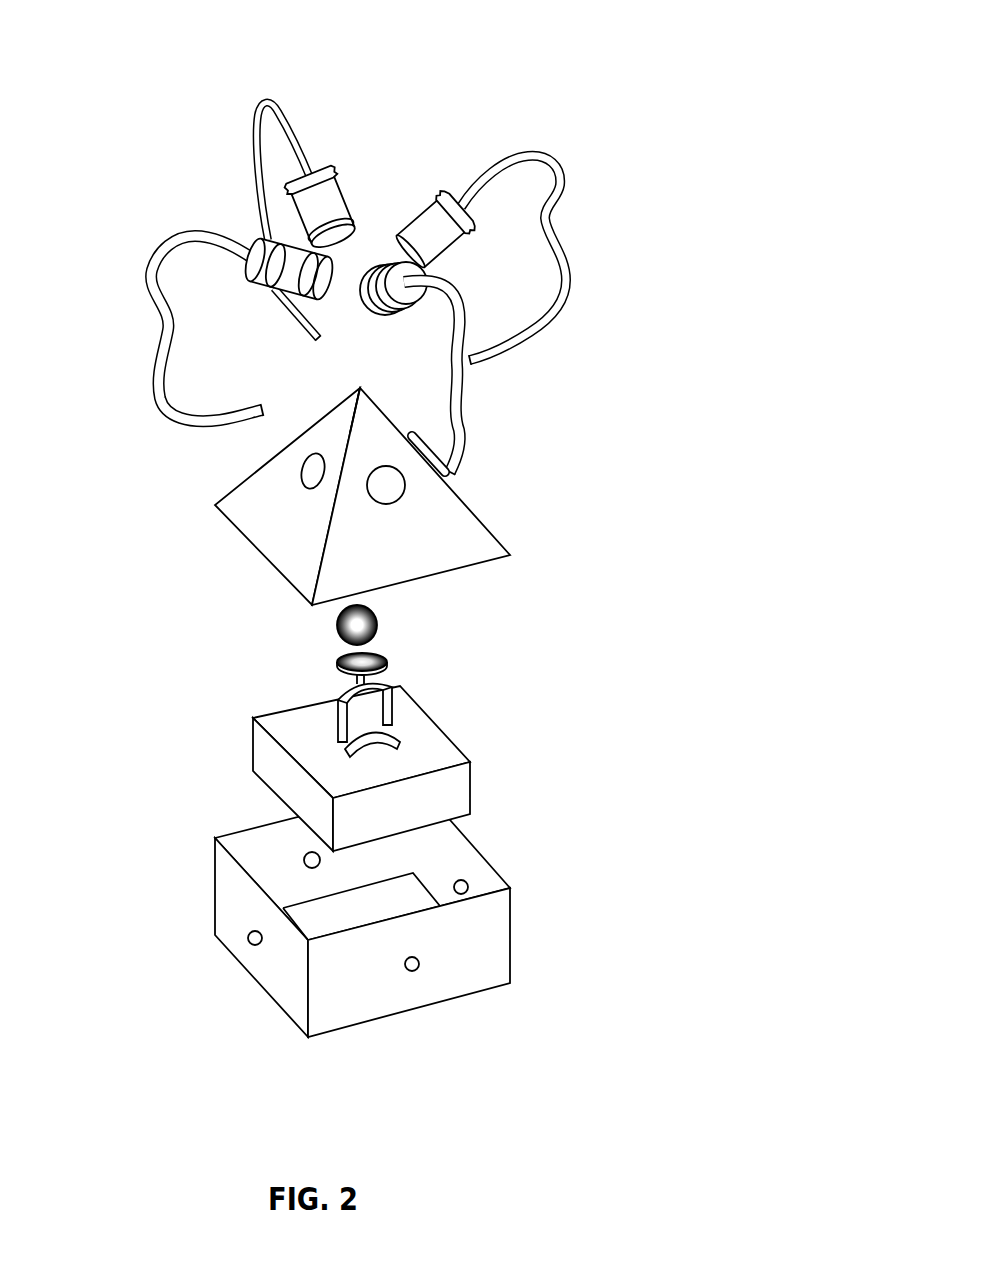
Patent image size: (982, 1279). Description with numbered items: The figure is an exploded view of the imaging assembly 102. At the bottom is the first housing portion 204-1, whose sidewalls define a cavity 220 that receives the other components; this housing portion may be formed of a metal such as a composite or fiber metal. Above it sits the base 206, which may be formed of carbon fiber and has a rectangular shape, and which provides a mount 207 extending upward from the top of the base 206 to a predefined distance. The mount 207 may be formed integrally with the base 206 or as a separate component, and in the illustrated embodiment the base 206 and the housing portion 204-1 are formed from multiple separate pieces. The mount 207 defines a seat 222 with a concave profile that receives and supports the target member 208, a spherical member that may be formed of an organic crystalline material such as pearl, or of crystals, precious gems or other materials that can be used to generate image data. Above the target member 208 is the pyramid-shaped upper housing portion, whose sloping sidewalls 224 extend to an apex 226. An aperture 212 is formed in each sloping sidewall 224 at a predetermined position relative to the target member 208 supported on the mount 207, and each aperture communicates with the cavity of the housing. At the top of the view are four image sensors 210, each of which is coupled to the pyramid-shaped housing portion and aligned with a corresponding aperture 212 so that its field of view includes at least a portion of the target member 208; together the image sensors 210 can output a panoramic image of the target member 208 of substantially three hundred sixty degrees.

The imaging assembly 102 is at (439, 522).
The first housing portion 204-1 is at (374, 691).
The base 206 is at (471, 776).
The mount 207 is at (260, 704).
The target member 208 is at (378, 628).
The image sensor 210 is at (382, 243).
The aperture 212 is at (278, 513).
The cavity 220 is at (300, 868).
The seat 222 is at (336, 661).
The sloping sidewall 224 is at (353, 496).
The apex 226 is at (304, 389).